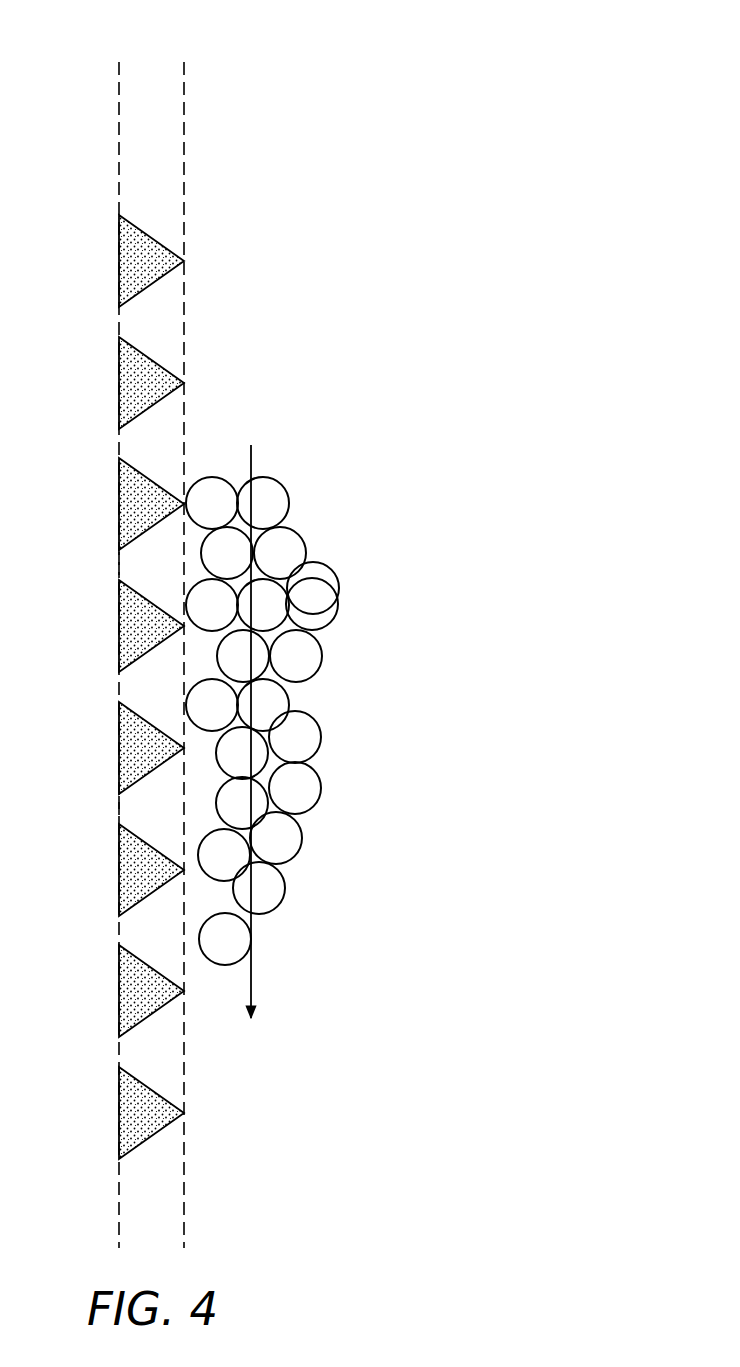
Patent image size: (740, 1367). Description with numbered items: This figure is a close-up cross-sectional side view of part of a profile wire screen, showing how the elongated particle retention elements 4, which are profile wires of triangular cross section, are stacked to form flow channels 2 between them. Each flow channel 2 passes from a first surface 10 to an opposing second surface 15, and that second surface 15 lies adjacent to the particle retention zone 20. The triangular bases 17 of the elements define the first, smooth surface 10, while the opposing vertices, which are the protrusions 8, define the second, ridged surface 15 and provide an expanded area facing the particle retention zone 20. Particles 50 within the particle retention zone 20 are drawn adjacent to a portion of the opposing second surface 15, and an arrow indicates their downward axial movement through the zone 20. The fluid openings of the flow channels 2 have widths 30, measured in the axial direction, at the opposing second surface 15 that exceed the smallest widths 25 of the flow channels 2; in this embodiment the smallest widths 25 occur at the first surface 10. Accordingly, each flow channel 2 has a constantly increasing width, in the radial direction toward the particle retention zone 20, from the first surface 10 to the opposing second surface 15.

The particle retention zone 20 is at (353, 55).
The first surface 10 is at (119, 133).
The opposing second surface 15 is at (184, 138).
The protrusions 8 is at (184, 261).
The smallest widths 25 is at (83, 245).
The widths 30 is at (193, 261).
The flow channels 2 is at (126, 565).
The elongated particle retention elements 4 is at (120, 623).
The triangular bases 17 is at (120, 870).
The particles 50 is at (315, 739).